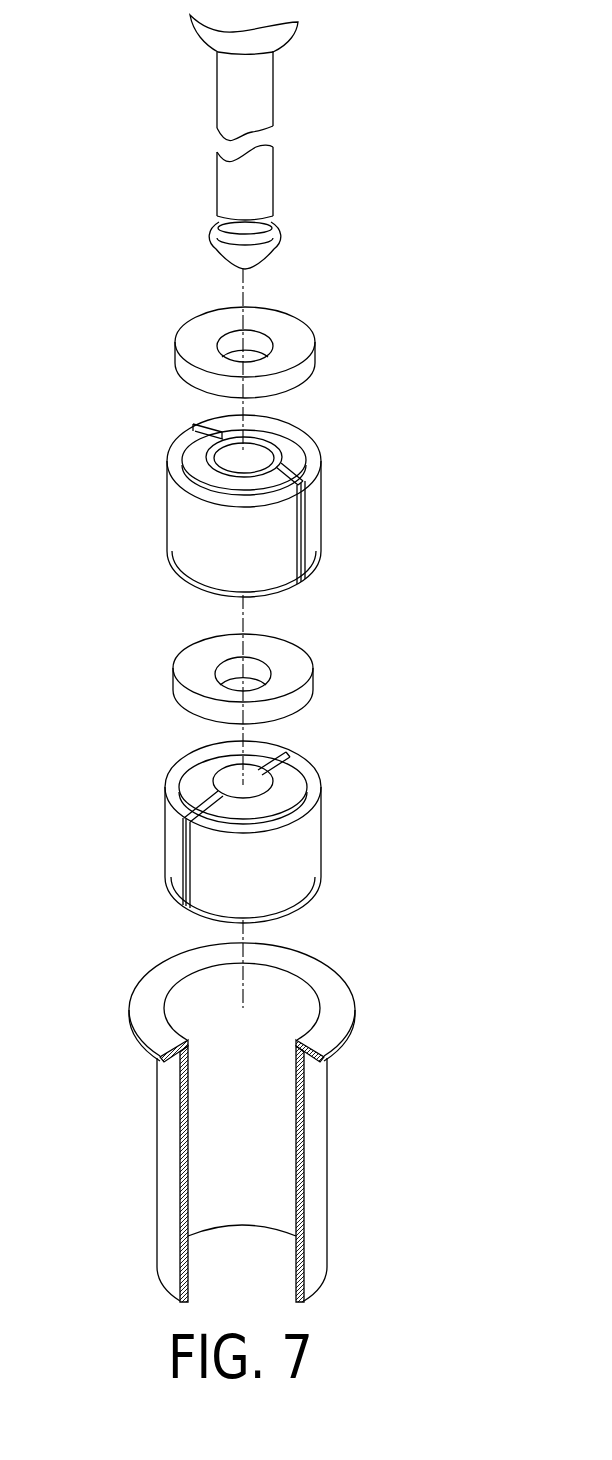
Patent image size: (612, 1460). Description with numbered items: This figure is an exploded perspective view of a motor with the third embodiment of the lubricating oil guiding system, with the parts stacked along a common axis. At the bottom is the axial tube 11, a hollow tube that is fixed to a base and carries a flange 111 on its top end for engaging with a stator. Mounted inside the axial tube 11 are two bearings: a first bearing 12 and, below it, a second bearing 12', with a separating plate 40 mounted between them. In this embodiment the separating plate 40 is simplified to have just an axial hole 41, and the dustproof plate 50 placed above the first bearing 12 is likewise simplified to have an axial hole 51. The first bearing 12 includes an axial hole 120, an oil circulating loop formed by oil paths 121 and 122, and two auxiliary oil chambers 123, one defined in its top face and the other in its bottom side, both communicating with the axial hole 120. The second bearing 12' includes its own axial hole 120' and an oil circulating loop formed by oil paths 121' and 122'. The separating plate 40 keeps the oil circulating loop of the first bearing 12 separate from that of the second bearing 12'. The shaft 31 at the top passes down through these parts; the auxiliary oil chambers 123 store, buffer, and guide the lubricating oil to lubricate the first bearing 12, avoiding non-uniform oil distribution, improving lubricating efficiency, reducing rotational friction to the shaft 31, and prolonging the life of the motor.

The shaft 31 is at (221, 192).
The dustproof plate 50 is at (172, 332).
The axial hole 51 is at (263, 343).
The first bearing 12 is at (170, 506).
The axial hole 120 is at (181, 444).
The oil path 121 is at (354, 457).
The oil path 122 is at (369, 532).
The auxiliary oil chamber 123 is at (280, 430).
The separating plate 40 is at (172, 672).
The axial hole 41 is at (262, 672).
The second bearing 12' is at (199, 804).
The axial hole 120' is at (335, 788).
The oil path 121' is at (336, 747).
The oil path 122' is at (137, 862).
The axial tube 11 is at (315, 1123).
The flange 111 is at (335, 995).